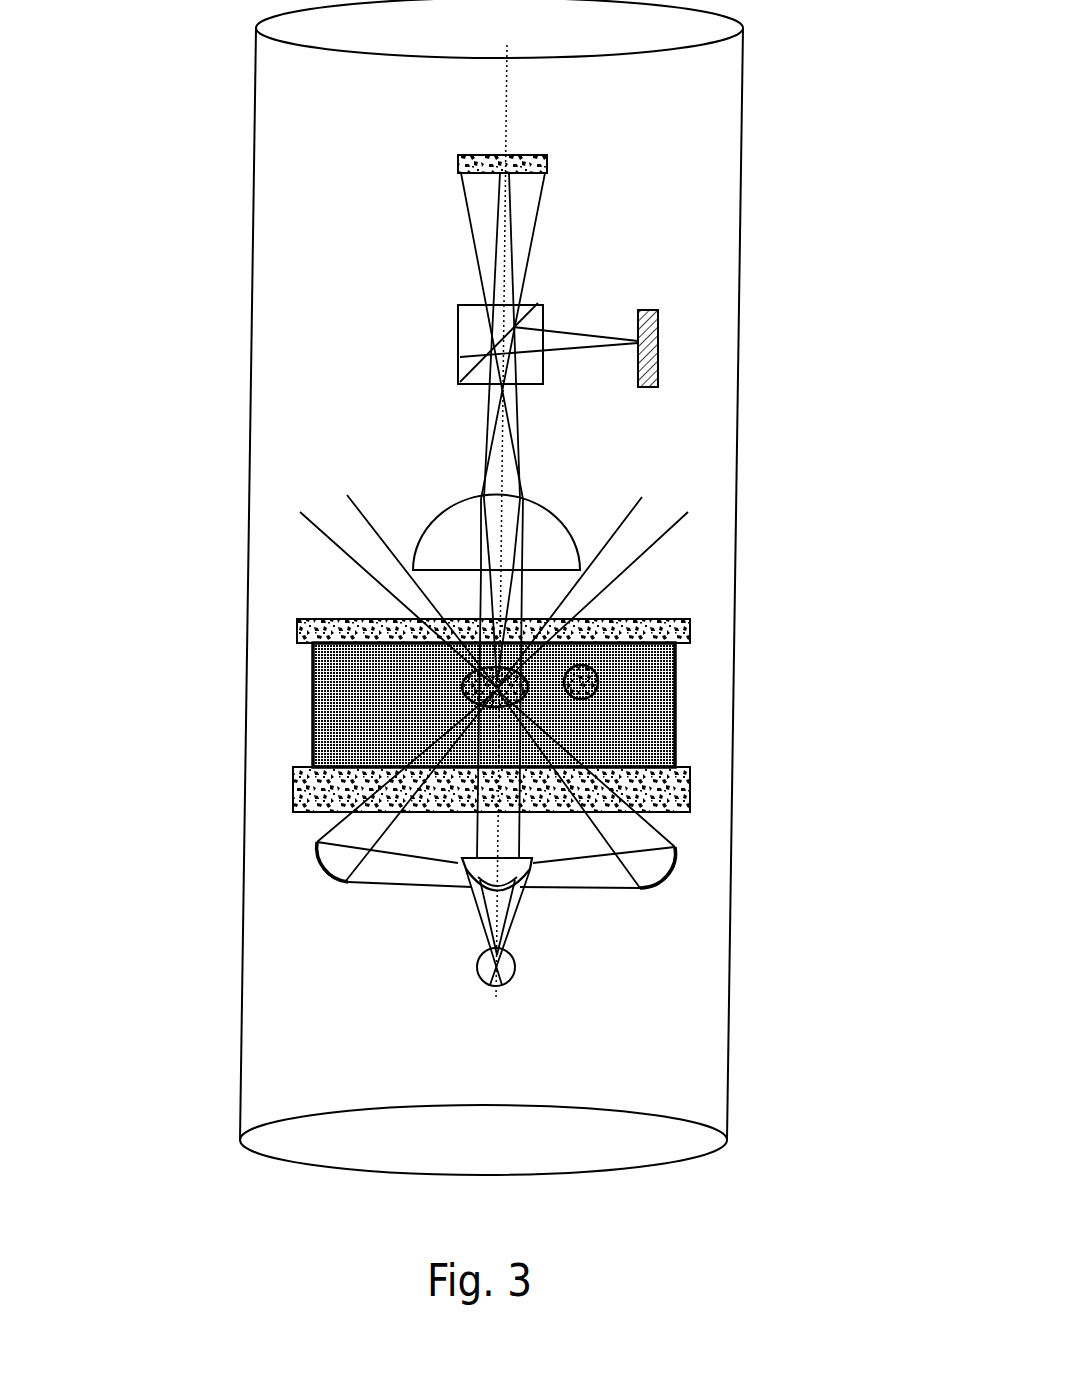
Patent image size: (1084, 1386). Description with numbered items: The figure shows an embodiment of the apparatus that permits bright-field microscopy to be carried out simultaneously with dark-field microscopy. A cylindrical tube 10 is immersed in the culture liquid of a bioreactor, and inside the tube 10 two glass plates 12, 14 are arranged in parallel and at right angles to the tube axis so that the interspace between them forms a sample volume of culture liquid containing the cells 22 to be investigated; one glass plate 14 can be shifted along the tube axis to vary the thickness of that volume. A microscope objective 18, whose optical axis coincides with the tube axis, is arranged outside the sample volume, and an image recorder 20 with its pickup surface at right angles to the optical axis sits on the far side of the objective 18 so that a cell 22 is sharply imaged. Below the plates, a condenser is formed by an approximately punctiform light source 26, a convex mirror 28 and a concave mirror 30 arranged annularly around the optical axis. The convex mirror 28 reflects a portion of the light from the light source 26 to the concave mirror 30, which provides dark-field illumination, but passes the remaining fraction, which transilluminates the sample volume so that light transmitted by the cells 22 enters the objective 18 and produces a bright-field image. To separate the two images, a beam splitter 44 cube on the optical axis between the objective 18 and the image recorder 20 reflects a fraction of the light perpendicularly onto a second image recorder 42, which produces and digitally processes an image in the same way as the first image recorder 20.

The cylindrical tube 10 is at (742, 413).
The glass plate 12 is at (660, 638).
The glass plate 14 is at (637, 678).
The microscope objective 18 is at (557, 542).
The image recorder 20 is at (547, 163).
The cell 22 is at (520, 702).
The light source 26 is at (512, 978).
The convex mirror 28 is at (520, 888).
The concave mirror 30 is at (315, 862).
The second image recorder 42 is at (652, 310).
The beam splitter 44 is at (467, 333).